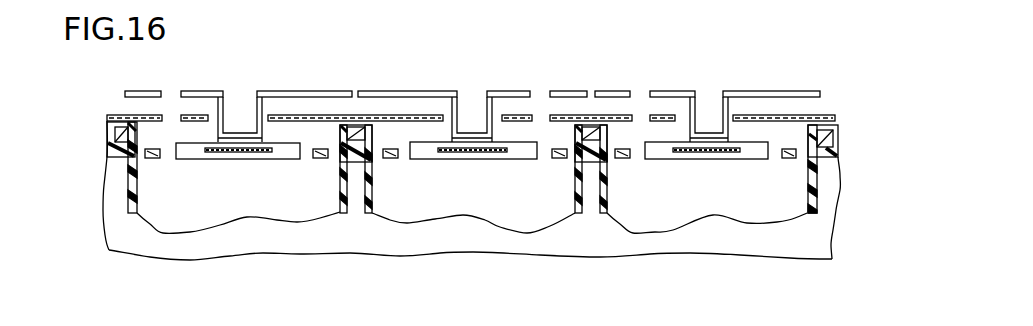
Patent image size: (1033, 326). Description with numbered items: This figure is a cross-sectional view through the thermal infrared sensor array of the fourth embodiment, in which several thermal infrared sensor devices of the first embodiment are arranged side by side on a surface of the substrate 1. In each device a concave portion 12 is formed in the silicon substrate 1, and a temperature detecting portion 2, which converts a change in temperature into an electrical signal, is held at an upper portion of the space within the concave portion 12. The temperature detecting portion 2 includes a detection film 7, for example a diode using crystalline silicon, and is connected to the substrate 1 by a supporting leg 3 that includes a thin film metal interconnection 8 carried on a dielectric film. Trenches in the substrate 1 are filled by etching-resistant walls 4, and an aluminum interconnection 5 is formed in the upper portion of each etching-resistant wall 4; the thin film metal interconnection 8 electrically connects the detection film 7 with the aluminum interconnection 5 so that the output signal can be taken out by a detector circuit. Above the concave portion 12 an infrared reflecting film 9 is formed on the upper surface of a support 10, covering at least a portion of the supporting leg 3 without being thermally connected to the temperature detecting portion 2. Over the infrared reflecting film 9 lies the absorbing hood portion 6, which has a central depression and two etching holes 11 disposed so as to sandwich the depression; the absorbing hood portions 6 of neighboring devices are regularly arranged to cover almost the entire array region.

The substrate 1 is at (810, 235).
The temperature detecting portion 2 is at (422, 155).
The supporting leg 3 is at (553, 156).
The etching-resistant wall 4 is at (815, 180).
The aluminum interconnection 5 is at (832, 138).
The absorbing hood portion 6 is at (423, 96).
The detection film 7 is at (484, 152).
The thin film metal interconnection 8 is at (561, 158).
The infrared reflecting film 9 is at (822, 112).
The support 10 is at (830, 120).
The etching hole 11 is at (541, 100).
The concave portion 12 is at (465, 197).